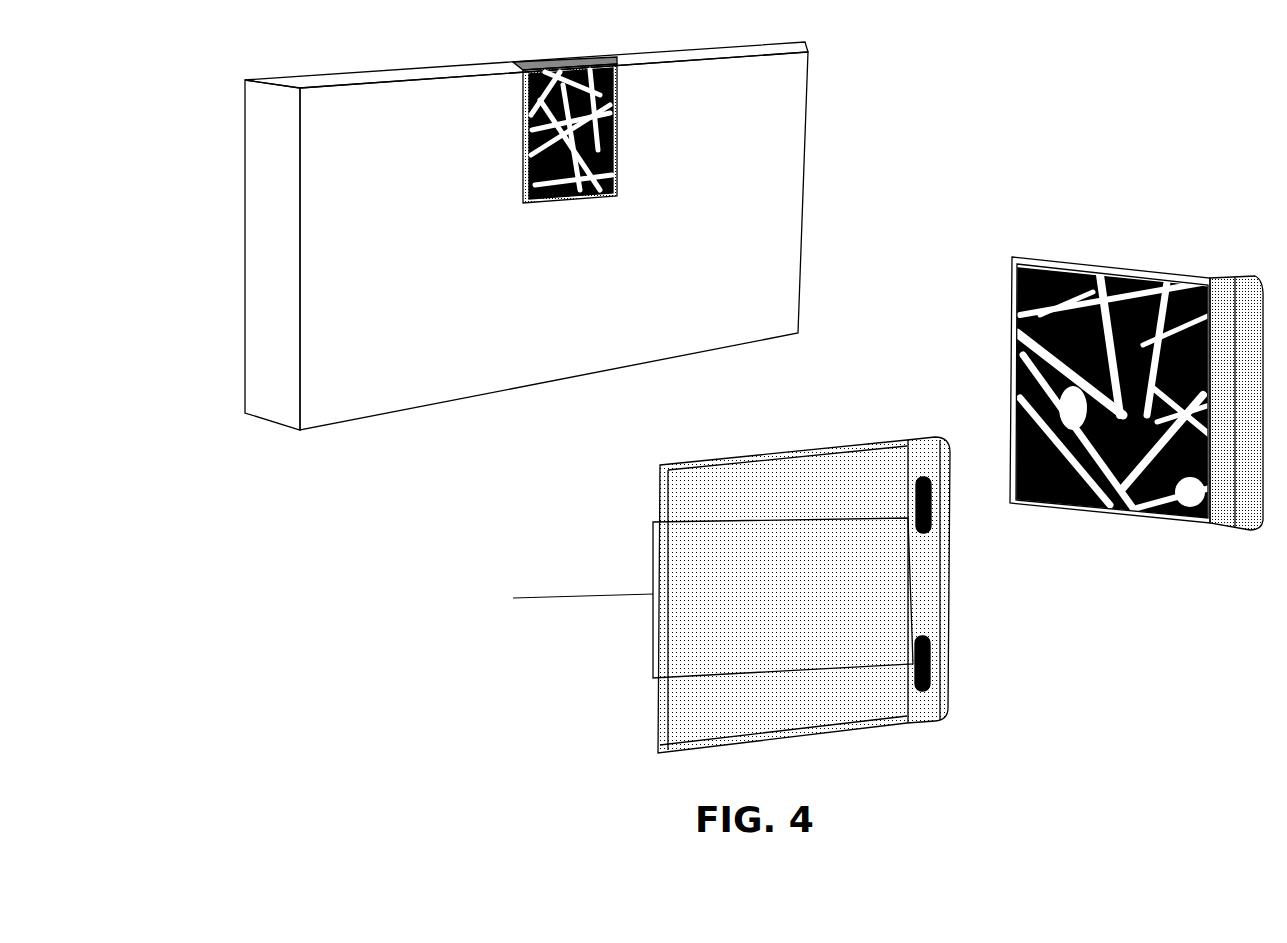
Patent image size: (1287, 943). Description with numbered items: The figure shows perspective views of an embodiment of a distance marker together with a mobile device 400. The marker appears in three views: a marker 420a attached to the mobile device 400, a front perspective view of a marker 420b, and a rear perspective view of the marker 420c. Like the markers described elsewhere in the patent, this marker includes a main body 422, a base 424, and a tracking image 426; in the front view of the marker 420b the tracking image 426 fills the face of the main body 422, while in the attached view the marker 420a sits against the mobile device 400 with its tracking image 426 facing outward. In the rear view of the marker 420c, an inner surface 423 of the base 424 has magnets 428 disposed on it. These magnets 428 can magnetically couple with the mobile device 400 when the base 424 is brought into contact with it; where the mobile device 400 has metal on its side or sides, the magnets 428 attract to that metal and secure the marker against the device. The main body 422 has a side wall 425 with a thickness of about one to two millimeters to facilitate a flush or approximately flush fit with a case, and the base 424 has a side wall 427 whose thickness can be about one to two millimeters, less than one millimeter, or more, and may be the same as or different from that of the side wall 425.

The mobile device 400 is at (368, 68).
The marker attached to the mobile device 420a is at (612, 122).
The marker in front perspective view 420b is at (1136, 248).
The marker in rear perspective view 420c is at (724, 599).
The tracking image 426 is at (530, 150).
The main body 422 is at (783, 450).
The base 424 is at (925, 440).
The side wall of the main body 425 is at (660, 710).
The inner surface of the base 423 is at (840, 703).
The side wall of the base 427 is at (943, 664).
The magnets 428 is at (930, 535).